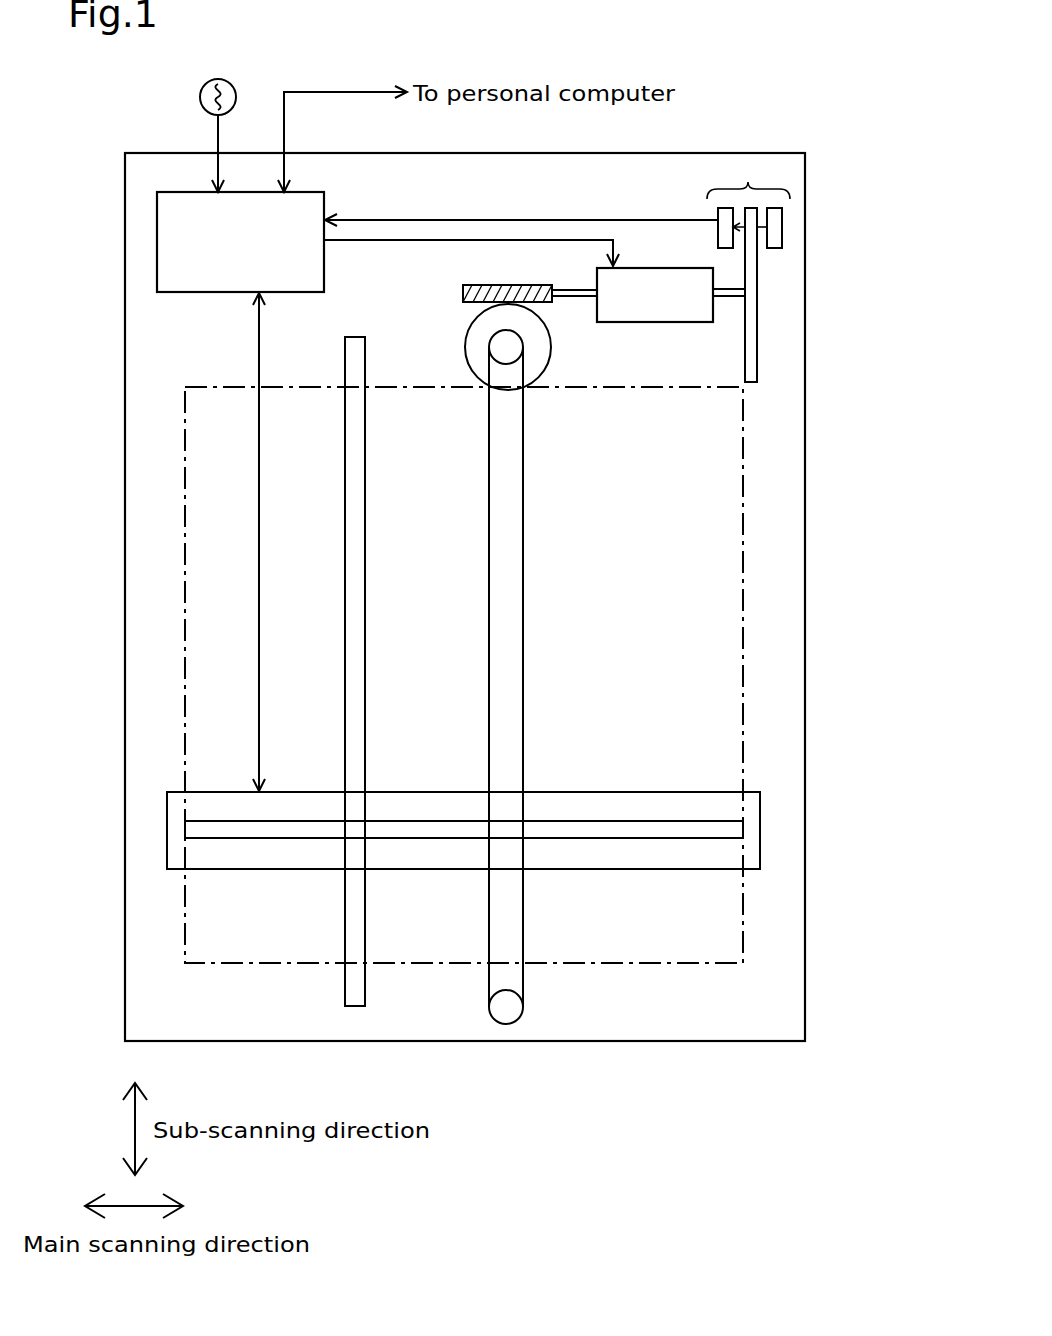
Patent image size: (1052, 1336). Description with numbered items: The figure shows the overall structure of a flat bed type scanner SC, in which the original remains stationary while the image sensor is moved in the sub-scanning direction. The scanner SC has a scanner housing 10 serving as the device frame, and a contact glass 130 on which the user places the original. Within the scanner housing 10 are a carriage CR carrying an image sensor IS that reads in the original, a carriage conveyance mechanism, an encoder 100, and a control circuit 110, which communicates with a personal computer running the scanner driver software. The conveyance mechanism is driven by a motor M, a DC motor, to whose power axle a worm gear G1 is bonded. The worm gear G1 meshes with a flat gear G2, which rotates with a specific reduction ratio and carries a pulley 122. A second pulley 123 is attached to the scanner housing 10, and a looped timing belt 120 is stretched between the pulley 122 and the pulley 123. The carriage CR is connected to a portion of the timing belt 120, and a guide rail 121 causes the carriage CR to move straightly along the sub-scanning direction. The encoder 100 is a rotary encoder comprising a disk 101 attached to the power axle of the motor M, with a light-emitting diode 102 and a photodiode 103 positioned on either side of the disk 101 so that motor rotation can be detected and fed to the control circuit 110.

The scanner housing 10 is at (805, 950).
The encoder 100 is at (749, 180).
The disk 101 is at (757, 331).
The light-emitting diode 102 is at (782, 223).
The photodiode 103 is at (718, 212).
The control circuit 110 is at (177, 294).
The timing belt 120 is at (523, 505).
The guide rail 121 is at (365, 505).
The pulley 122 is at (489, 345).
The pulley 123 is at (522, 1013).
The contact glass 130 is at (745, 555).
The worm gear G1 is at (460, 293).
The flat gear G2 is at (551, 350).
The motor M is at (682, 323).
The carriage CR is at (578, 792).
The image sensor IS is at (690, 821).
The scanner SC is at (687, 1143).